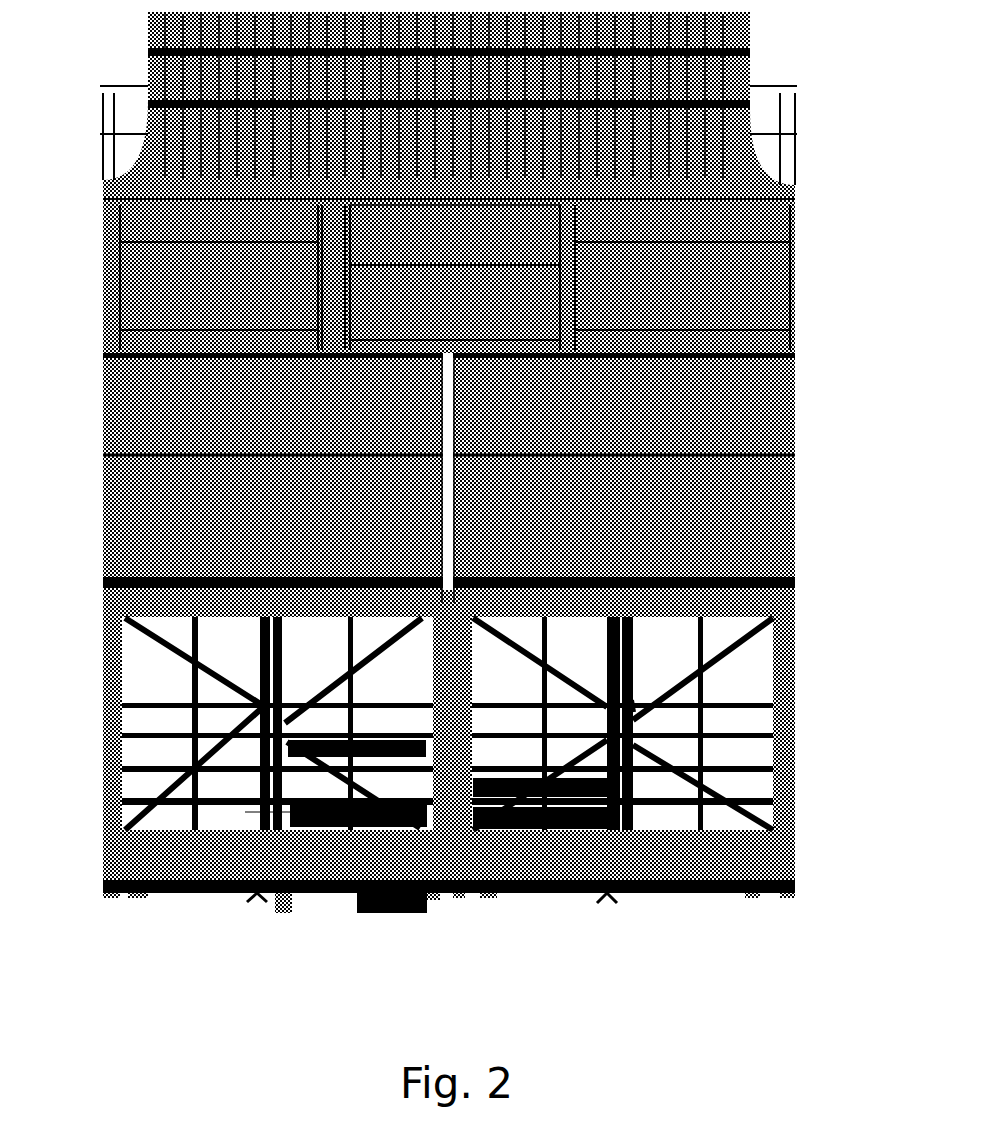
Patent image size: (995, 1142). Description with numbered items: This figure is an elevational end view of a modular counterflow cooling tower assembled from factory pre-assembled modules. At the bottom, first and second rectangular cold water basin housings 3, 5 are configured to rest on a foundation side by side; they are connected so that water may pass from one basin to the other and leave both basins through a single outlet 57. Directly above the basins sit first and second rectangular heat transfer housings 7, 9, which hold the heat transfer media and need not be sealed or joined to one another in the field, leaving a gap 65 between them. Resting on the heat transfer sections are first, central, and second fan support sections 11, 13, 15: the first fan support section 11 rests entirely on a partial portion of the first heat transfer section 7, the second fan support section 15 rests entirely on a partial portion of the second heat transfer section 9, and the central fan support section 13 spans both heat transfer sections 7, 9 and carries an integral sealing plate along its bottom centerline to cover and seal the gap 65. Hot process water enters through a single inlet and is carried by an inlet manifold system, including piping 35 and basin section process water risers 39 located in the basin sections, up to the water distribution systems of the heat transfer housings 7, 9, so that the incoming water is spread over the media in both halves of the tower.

The first rectangular cold water basin housing 3 is at (103, 718).
The second rectangular cold water basin housing 5 is at (790, 672).
The first rectangular heat transfer housing 7 is at (103, 424).
The second rectangular heat transfer housing 9 is at (790, 417).
The first fan support section 11 is at (103, 220).
The central fan support section 13 is at (455, 235).
The second fan support section 15 is at (790, 252).
The piping 35 is at (258, 822).
The basin section process water risers 39 is at (632, 666).
The single outlet 57 is at (404, 926).
The gap 65 is at (453, 367).